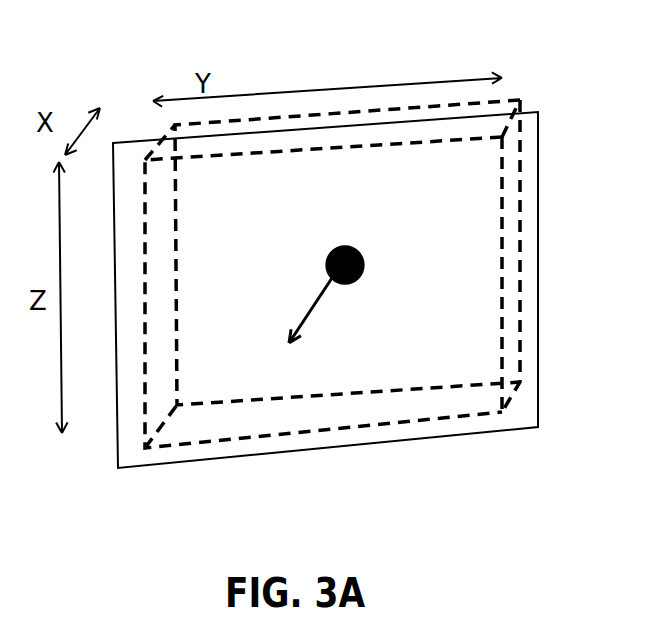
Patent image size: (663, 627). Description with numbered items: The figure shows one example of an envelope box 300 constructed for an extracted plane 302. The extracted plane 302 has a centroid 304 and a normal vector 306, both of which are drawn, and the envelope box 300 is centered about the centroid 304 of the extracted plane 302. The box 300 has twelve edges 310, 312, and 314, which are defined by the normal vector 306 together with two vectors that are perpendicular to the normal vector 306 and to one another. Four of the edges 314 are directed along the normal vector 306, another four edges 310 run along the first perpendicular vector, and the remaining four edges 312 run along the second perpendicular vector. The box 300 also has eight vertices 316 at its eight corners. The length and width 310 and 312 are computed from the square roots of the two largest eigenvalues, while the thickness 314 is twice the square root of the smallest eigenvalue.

The envelope box 300 is at (218, 443).
The extracted plane 302 is at (478, 435).
The centroid 304 is at (363, 260).
The normal vector 306 is at (315, 298).
The edges 310 is at (332, 112).
The edges 312 is at (503, 273).
The edges 314 is at (508, 130).
The vertices 316 is at (522, 102).